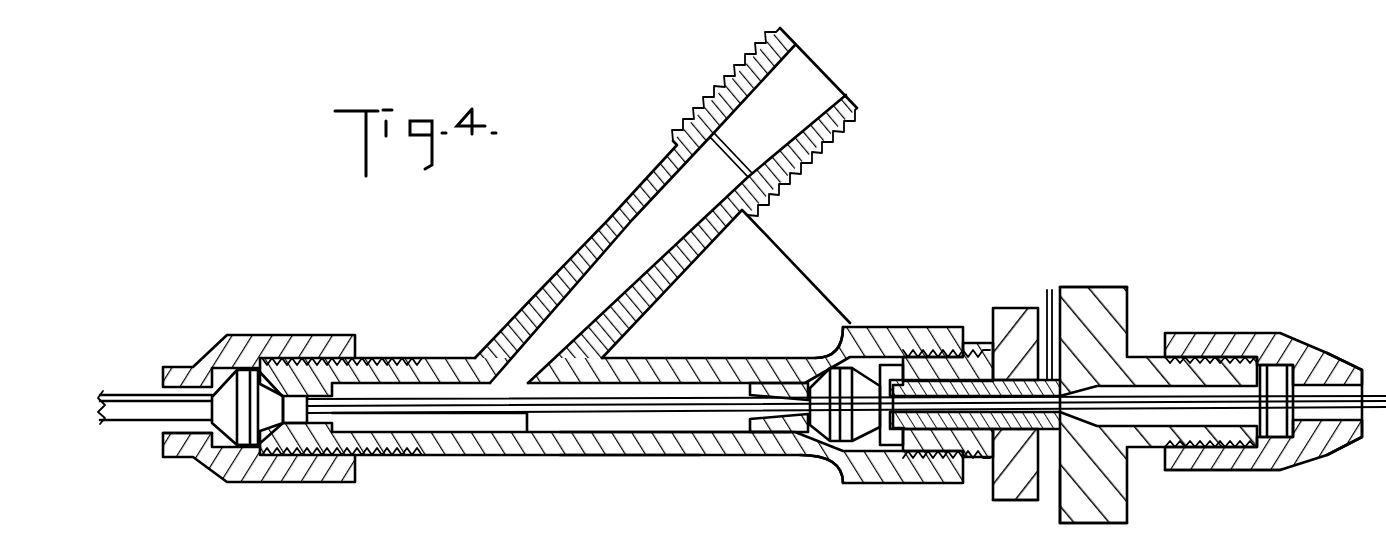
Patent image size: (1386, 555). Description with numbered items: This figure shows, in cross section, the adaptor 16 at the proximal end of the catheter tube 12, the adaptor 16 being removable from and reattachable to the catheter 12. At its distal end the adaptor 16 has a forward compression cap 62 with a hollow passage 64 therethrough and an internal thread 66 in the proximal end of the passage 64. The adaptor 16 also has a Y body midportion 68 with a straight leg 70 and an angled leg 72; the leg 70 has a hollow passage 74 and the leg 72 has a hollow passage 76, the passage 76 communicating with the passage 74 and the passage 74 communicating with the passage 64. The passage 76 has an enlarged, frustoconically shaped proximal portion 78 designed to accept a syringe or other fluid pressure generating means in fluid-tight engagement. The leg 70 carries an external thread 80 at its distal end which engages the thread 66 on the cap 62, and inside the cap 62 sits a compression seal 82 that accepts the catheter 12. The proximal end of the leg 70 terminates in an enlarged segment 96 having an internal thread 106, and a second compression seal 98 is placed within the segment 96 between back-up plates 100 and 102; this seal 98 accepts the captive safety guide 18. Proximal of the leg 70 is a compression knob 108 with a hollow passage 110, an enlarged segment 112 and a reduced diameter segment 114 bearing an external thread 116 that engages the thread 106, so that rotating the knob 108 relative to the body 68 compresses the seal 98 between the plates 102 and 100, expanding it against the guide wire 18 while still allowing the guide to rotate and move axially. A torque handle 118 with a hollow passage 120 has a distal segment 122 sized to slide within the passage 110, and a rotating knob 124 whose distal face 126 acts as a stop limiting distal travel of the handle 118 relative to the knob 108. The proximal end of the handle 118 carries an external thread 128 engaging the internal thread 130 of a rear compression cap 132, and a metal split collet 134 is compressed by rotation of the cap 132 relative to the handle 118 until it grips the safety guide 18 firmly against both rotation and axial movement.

The catheter tube 12 is at (130, 392).
The adaptor 16 is at (445, 478).
The captive safety guide 18 is at (528, 416).
The forward compression cap 62 is at (217, 335).
The hollow passage 64 is at (180, 437).
The internal thread 66 is at (253, 370).
The Y body midportion 68 is at (434, 360).
The straight leg 70 is at (630, 455).
The angled leg 72 is at (637, 190).
The hollow passage 74 is at (690, 430).
The hollow passage 76 is at (703, 177).
The frustoconically shaped proximal portion 78 is at (737, 72).
The external thread 80 is at (373, 360).
The compression seal 82 is at (250, 434).
The enlarged segment 96 is at (900, 486).
The second compression seal 98 is at (822, 352).
The back-up plate 100 is at (761, 434).
The back-up plate 102 is at (868, 352).
The internal thread 106 is at (878, 345).
The compression knob 108 is at (1011, 503).
The hollow passage 110 is at (912, 350).
The enlarged segment 112 is at (1017, 308).
The reduced diameter segment 114 is at (983, 460).
The external thread 116 is at (985, 342).
The torque handle 118 is at (1138, 508).
The hollow passage 120 is at (1088, 380).
The distal segment 122 is at (1047, 290).
The rotating knob 124 is at (1103, 523).
The distal face 126 is at (1058, 510).
The external thread 128 is at (1146, 352).
The internal thread 130 is at (1241, 358).
The rear compression cap 132 is at (1328, 352).
The metal split collet 134 is at (1208, 447).